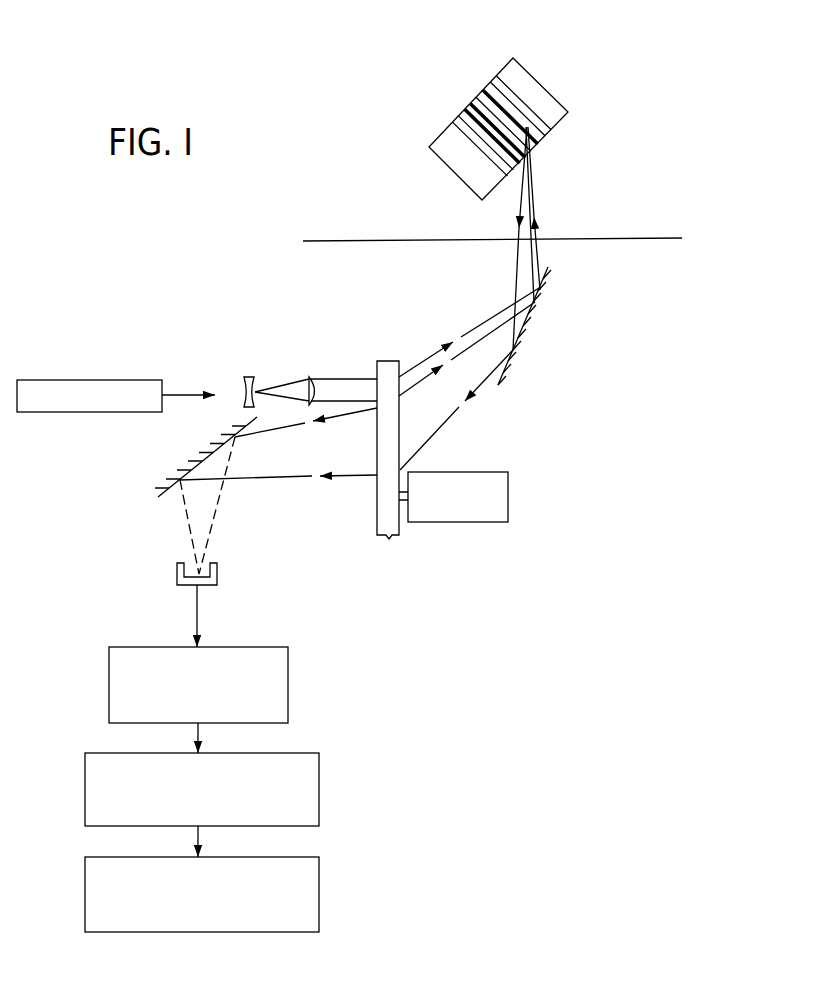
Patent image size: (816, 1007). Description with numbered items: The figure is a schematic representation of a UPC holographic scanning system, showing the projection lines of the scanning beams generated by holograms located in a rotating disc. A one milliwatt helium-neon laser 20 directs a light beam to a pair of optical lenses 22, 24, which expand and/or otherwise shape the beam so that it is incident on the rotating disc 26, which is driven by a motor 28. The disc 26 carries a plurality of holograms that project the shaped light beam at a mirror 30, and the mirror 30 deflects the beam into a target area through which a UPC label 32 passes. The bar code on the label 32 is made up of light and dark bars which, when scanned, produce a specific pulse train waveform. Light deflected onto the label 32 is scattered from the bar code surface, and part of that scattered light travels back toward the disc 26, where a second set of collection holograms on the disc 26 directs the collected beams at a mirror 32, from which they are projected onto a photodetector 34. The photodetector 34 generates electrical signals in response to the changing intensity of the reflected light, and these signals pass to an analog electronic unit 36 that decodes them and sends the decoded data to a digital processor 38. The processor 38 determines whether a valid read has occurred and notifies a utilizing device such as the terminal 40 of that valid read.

The helium-neon laser 20 is at (136, 380).
The optical lens 22 is at (246, 377).
The optical lens 24 is at (312, 377).
The rotating disc 26 is at (382, 361).
The motor 28 is at (508, 507).
The mirror 30 is at (548, 267).
The UPC label 32 is at (475, 100).
The photodetector 34 is at (217, 570).
The analog electronic unit 36 is at (288, 683).
The digital processor 38 is at (319, 781).
The terminal 40 is at (319, 892).